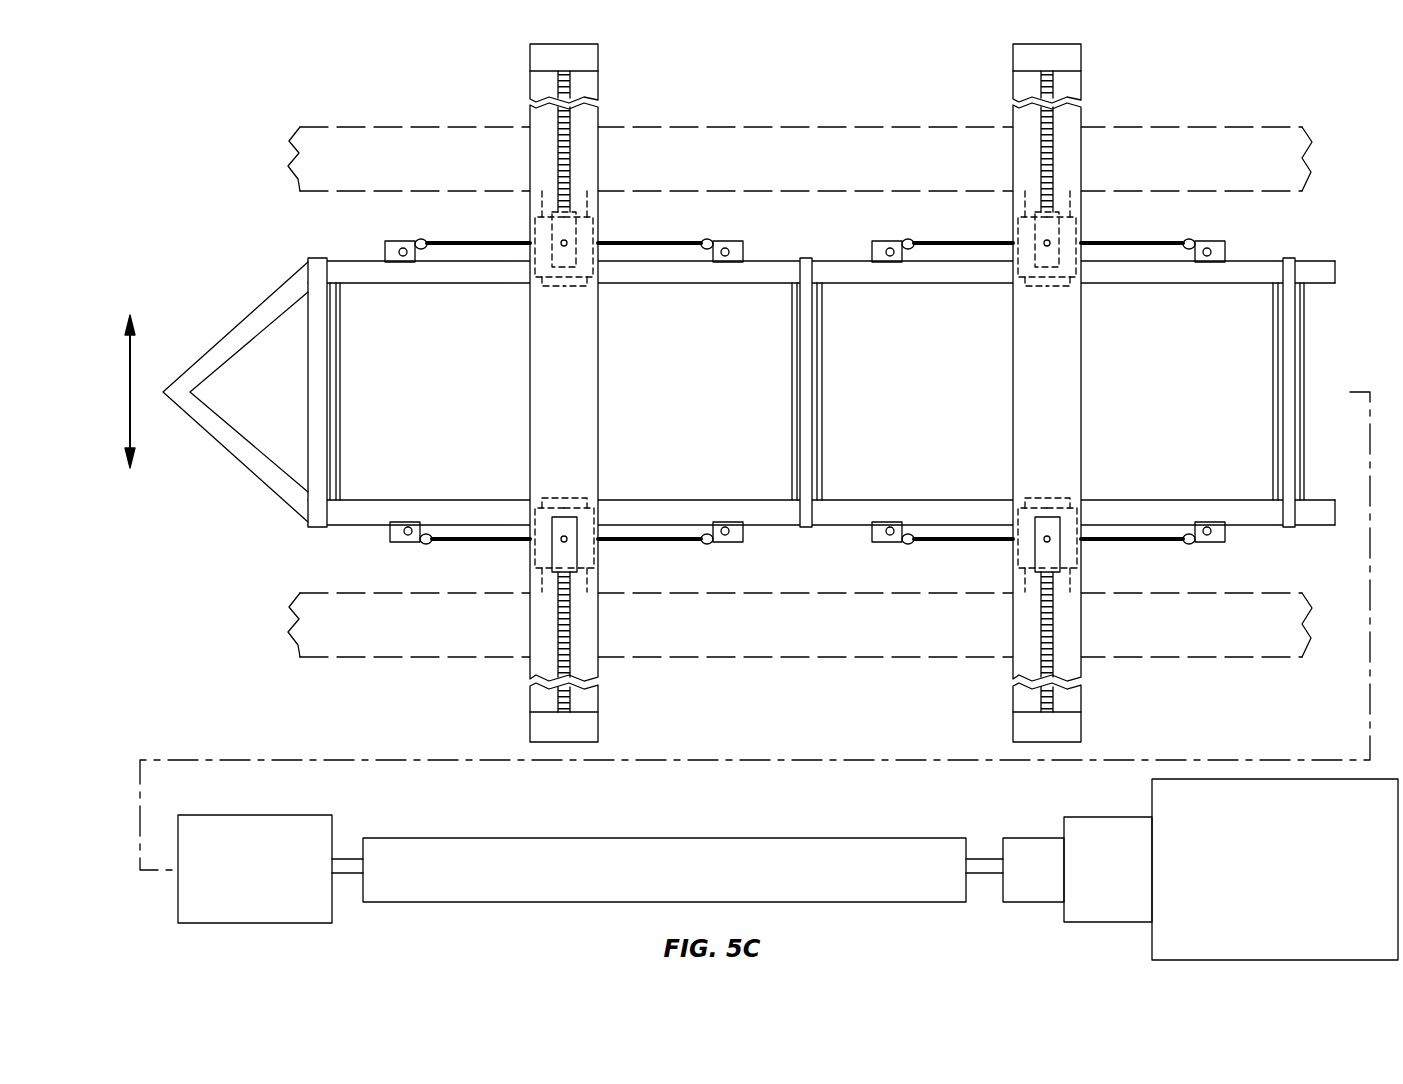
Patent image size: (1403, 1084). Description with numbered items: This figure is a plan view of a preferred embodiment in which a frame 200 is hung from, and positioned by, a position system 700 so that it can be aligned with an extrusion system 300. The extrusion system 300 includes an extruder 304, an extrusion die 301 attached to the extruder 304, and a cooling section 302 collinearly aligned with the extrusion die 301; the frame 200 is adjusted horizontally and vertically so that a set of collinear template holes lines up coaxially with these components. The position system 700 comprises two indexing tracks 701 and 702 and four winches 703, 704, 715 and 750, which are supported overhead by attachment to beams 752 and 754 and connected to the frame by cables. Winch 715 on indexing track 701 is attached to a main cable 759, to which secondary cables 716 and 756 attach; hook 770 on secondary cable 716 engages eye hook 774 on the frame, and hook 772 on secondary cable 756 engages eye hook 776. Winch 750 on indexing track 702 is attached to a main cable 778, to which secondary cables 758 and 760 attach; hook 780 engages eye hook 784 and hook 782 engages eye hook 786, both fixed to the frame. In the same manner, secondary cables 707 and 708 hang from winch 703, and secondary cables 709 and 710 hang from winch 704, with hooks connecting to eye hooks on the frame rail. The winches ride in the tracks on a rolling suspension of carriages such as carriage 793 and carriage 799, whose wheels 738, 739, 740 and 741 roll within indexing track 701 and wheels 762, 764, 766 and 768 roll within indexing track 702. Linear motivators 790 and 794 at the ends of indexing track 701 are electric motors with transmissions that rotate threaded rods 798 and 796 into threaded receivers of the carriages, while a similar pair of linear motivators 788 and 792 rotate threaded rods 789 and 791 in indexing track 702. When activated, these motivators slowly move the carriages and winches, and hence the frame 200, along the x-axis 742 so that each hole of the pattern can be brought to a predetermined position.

The frame 200 is at (290, 245).
The position system 700 is at (513, 98).
The indexing track 701 is at (530, 416).
The indexing track 702 is at (1082, 395).
The winch 703 is at (585, 498).
The winch 704 is at (1070, 498).
The secondary cable 707 is at (428, 546).
The secondary cable 708 is at (670, 543).
The secondary cable 709 is at (902, 548).
The secondary cable 710 is at (1160, 543).
The winch 715 is at (580, 288).
The secondary cable 716 is at (458, 241).
The wheel 738 is at (535, 232).
The wheel 739 is at (592, 232).
The wheel 740 is at (590, 552).
The wheel 741 is at (535, 552).
The x-axis 742 is at (128, 340).
The winch 750 is at (1062, 288).
The beam 752 is at (1165, 127).
The beam 754 is at (865, 657).
The secondary cable 756 is at (670, 241).
The secondary cable 758 is at (930, 241).
The main cable 759 is at (548, 288).
The secondary cable 760 is at (1155, 241).
The wheel 762 is at (1018, 552).
The wheel 764 is at (1075, 552).
The wheel 766 is at (1018, 232).
The wheel 768 is at (1075, 232).
The hook 770 is at (395, 240).
The hook 772 is at (735, 242).
The eye hook 774 is at (385, 262).
The eye hook 776 is at (748, 262).
The main cable 778 is at (1030, 288).
The hook 780 is at (872, 240).
The hook 782 is at (1220, 240).
The eye hook 784 is at (866, 262).
The eye hook 786 is at (1232, 262).
The linear motivator 788 is at (1082, 60).
The threaded rod 789 is at (1054, 164).
The linear motivator 790 is at (598, 60).
The threaded rod 791 is at (1054, 622).
The linear motivator 792 is at (1013, 722).
The carriage 793 is at (1038, 212).
The linear motivator 794 is at (530, 722).
The threaded rod 796 is at (571, 622).
The threaded rod 798 is at (571, 164).
The carriage 799 is at (1035, 572).
The extrusion system 300 is at (232, 881).
The extrusion die 301 is at (1084, 881).
The cooling section 302 is at (642, 881).
The extruder 304 is at (1257, 881).